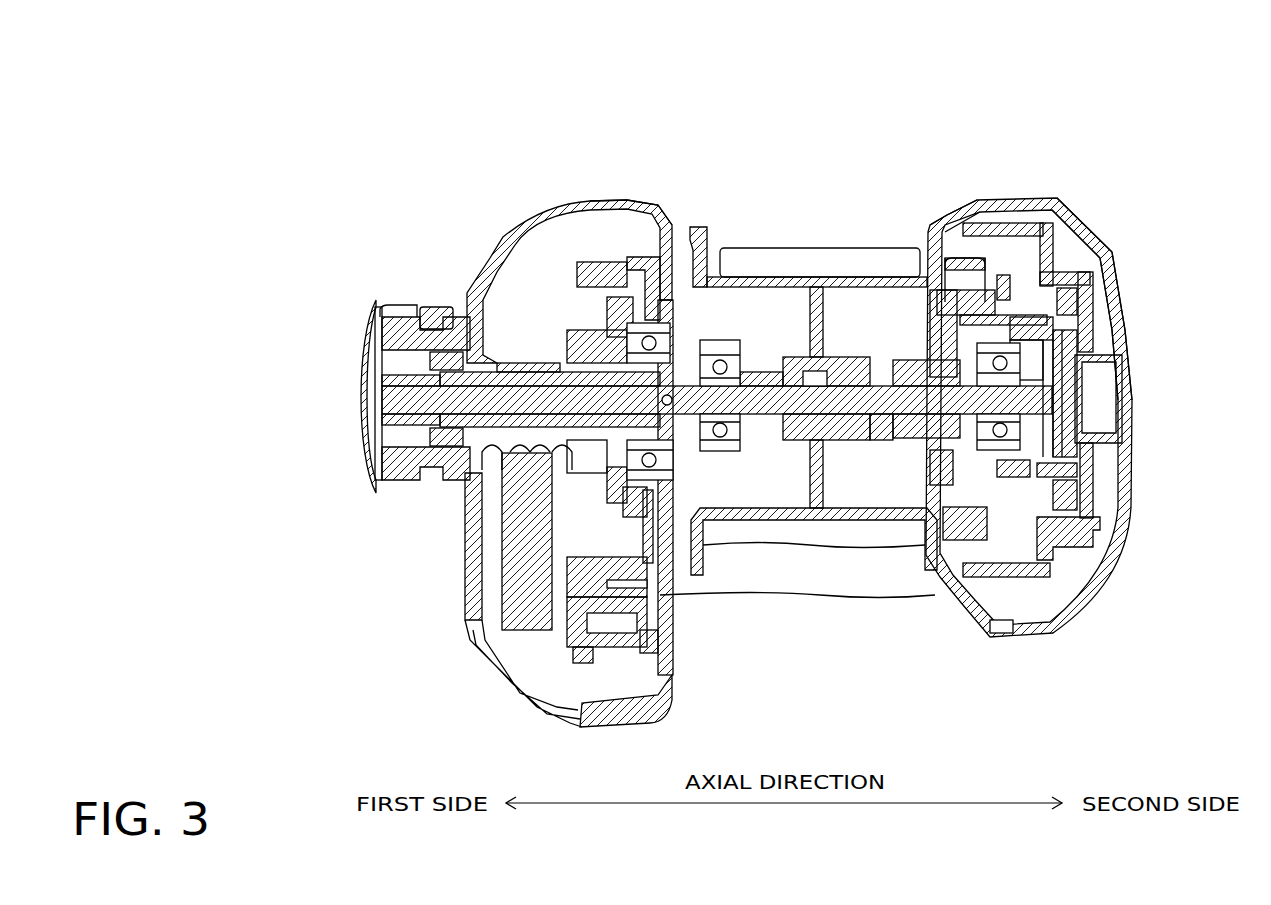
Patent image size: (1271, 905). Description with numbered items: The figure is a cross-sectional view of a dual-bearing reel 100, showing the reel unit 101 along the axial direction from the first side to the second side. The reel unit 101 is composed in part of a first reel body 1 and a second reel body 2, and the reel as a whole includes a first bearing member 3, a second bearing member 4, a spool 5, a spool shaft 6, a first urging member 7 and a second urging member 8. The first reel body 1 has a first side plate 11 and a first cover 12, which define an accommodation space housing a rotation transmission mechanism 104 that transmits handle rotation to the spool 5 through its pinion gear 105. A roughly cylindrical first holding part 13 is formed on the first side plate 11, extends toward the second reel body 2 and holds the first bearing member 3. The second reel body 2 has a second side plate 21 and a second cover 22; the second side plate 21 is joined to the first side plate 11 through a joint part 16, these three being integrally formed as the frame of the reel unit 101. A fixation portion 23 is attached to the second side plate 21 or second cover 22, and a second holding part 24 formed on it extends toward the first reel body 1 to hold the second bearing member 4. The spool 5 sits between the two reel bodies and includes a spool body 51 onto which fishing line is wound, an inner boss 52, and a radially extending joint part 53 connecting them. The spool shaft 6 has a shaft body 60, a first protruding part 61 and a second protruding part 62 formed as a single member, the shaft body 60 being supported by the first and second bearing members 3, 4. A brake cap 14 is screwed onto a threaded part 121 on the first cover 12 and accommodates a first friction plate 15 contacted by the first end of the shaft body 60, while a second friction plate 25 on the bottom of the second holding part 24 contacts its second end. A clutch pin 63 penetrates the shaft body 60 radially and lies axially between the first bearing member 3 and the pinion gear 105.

The dual-bearing reel 100 is at (1112, 126).
The reel unit 101 is at (556, 138).
The first reel body 1 is at (597, 190).
The first side plate 11 is at (673, 197).
The first cover 12 is at (530, 214).
The first holding part 13 is at (718, 250).
The brake cap 14 is at (375, 310).
The threaded part 121 is at (425, 306).
The first friction plate 15 is at (400, 482).
The joint part 16 is at (703, 580).
The rotation transmission mechanism 104 is at (511, 341).
The pinion gear 105 is at (547, 363).
The first bearing member 3 is at (746, 352).
The first urging member 7 is at (772, 372).
The clutch pin 63 is at (684, 458).
The second bearing member 4 is at (940, 300).
The spool body 51 is at (892, 288).
The boss 52 is at (848, 356).
The joint part 53 is at (823, 331).
The spool 5 is at (756, 524).
The shaft body 60 is at (790, 422).
The first protruding part 61 is at (847, 428).
The spool shaft 6 is at (890, 437).
The second protruding part 62 is at (931, 457).
The second reel body 2 is at (1022, 184).
The second side plate 21 is at (977, 199).
The second cover 22 is at (1100, 225).
The fixation portion 23 is at (1120, 262).
The second holding part 24 is at (1072, 550).
The second friction plate 25 is at (1077, 411).
The second urging member 8 is at (1053, 442).